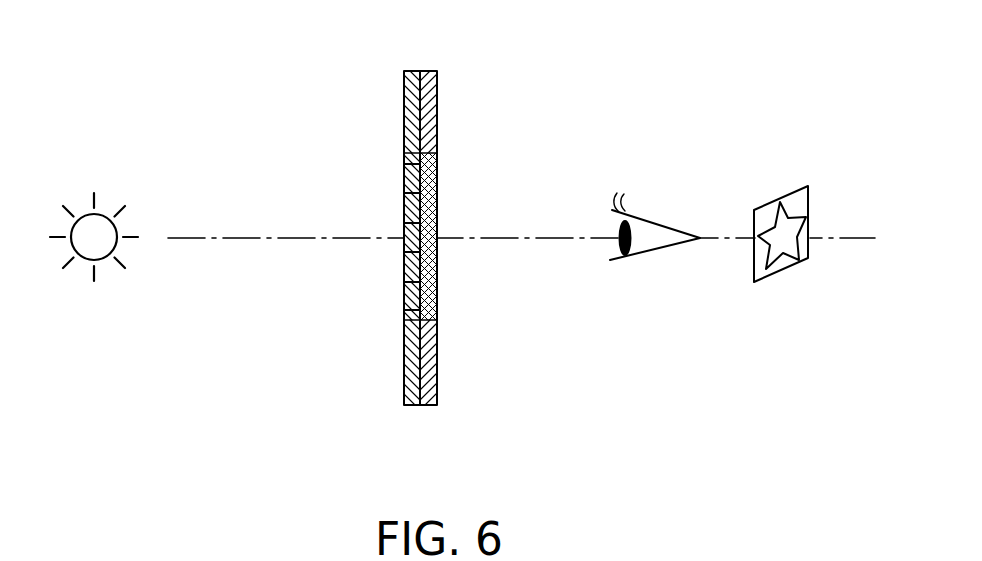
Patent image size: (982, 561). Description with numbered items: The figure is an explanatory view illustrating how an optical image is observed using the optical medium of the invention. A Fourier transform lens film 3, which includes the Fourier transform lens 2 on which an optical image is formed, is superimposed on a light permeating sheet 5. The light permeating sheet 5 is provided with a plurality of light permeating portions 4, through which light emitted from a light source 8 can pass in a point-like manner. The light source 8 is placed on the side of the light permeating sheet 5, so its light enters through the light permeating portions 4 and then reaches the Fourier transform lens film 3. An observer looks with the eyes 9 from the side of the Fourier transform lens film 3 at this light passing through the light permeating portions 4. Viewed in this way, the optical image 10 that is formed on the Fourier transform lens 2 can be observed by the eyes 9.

The Fourier transform lens 2 is at (437, 275).
The Fourier transform lens film 3 is at (428, 406).
The light permeating portions 4 is at (404, 252).
The light permeating sheet 5 is at (410, 406).
The light source 8 is at (102, 222).
The eyes 9 is at (645, 222).
The optical image 10 is at (780, 198).